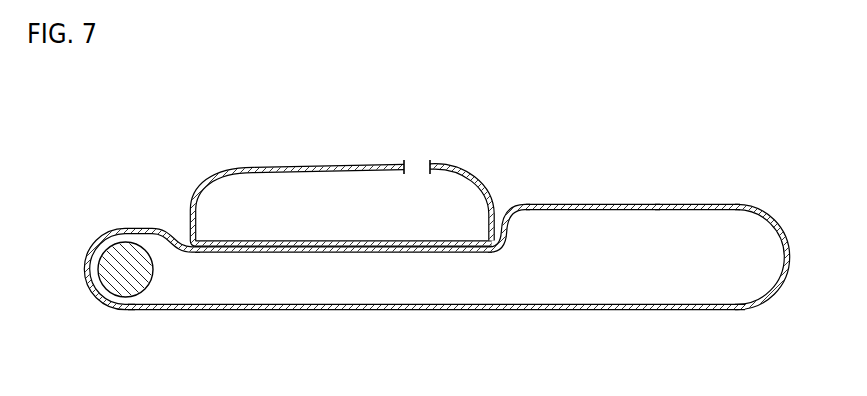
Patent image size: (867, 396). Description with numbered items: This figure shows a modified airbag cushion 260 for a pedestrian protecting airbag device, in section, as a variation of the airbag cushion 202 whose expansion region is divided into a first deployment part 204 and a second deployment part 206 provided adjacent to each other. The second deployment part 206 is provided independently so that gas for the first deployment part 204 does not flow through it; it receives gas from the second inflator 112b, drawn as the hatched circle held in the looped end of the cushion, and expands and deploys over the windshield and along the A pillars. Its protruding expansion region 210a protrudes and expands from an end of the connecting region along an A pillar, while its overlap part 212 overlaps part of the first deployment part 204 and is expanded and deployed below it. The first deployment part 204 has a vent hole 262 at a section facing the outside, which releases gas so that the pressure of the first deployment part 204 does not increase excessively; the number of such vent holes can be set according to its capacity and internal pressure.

The airbag cushion 260 is at (203, 139).
The airbag cushion 202 is at (594, 206).
The first deployment part 204 is at (333, 166).
The second deployment part 206 is at (511, 208).
The protruding expansion region 210a is at (673, 206).
The overlap part 212 is at (341, 285).
The vent hole 262 is at (431, 166).
The second inflator 112b is at (127, 250).